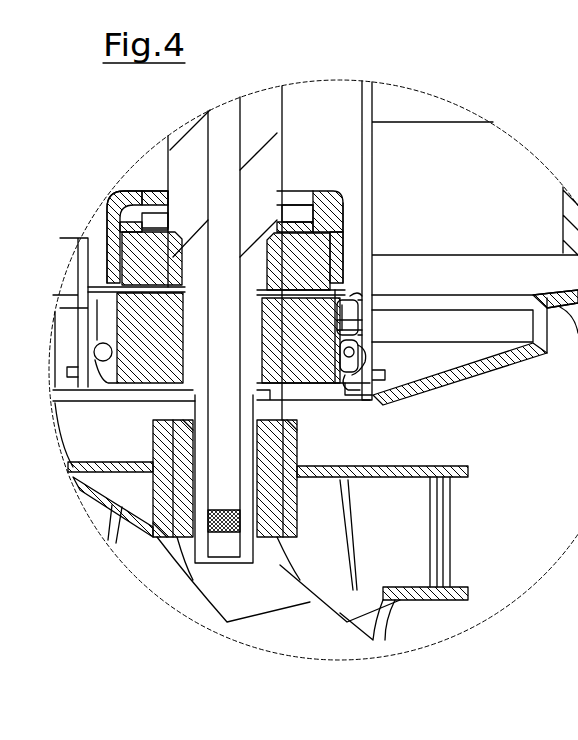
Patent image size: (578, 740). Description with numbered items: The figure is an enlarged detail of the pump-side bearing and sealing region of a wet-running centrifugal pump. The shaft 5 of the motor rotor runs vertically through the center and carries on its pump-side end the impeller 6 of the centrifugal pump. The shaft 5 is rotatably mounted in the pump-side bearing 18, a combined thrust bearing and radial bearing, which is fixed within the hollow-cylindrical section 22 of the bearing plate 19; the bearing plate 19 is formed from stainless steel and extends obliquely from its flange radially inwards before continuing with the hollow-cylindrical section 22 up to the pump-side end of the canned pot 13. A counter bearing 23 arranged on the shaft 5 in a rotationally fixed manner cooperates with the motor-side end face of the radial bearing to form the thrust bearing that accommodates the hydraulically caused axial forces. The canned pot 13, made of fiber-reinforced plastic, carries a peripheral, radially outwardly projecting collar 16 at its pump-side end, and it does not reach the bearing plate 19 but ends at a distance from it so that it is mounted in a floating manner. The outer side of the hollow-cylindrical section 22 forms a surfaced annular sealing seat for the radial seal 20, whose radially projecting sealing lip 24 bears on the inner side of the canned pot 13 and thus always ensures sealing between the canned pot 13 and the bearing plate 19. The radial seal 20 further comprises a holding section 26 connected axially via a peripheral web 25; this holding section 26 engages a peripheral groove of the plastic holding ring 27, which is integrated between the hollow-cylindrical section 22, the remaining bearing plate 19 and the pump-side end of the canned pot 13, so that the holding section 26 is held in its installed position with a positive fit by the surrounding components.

The shaft 5 is at (270, 158).
The impeller 6 is at (450, 548).
The canned pot 13 is at (325, 255).
The collar 16 is at (365, 345).
The pump-side bearing 18 is at (352, 300).
The bearing plate 19 is at (493, 363).
The radial seal 20 is at (355, 322).
The hollow-cylindrical section 22 is at (325, 380).
The counter bearing 23 is at (365, 195).
The sealing lip 24 is at (400, 330).
The web 25 is at (385, 345).
The holding section 26 is at (120, 388).
The holding ring 27 is at (90, 395).